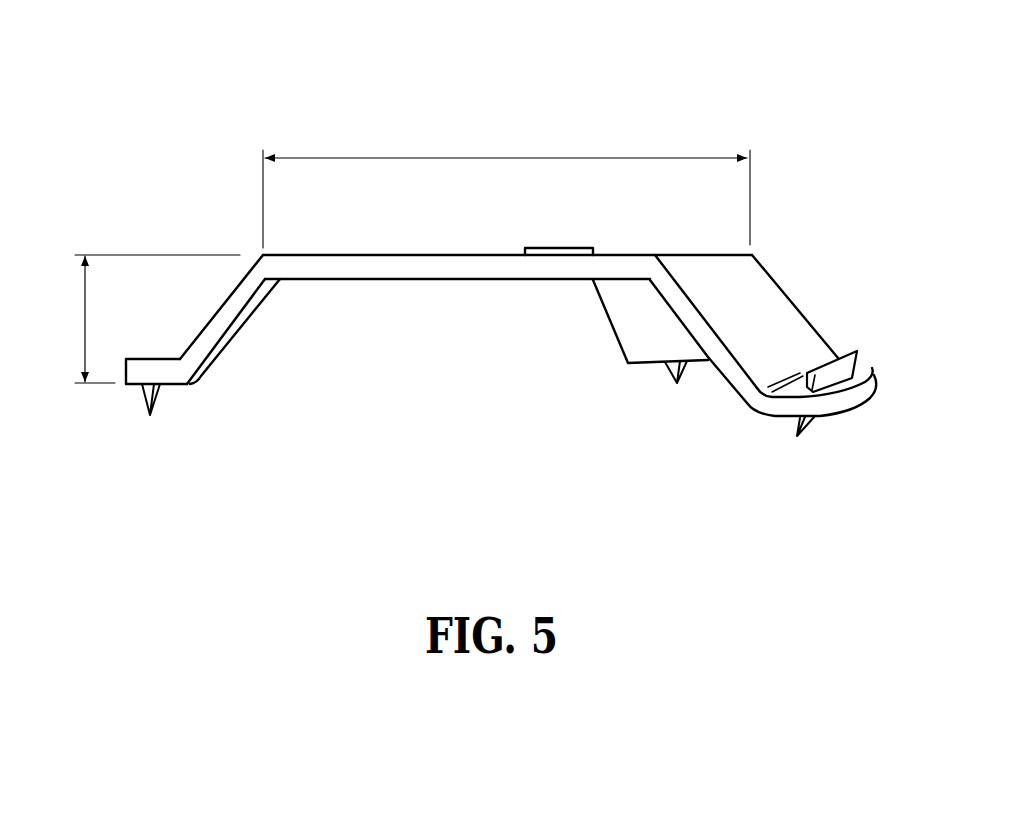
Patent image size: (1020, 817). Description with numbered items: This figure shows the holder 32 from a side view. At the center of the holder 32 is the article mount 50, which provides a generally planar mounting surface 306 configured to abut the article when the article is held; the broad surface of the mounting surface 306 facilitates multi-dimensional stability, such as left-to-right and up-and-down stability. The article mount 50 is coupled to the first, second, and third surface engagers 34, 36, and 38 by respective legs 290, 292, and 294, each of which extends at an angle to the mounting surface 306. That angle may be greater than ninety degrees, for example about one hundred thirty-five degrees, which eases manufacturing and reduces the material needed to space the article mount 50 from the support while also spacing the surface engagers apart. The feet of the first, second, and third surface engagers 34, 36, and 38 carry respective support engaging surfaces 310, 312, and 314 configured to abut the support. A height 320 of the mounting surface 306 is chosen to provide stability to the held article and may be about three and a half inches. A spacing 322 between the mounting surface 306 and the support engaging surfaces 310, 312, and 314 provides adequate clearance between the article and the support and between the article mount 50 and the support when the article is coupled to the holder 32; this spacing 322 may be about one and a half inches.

The holder 32 is at (670, 87).
The article mount 50 is at (325, 231).
The generally planar mounting surface 306 is at (389, 250).
The height 320 is at (499, 156).
The spacing 322 is at (85, 327).
The leg 294 is at (220, 323).
The third surface engager 38 is at (167, 375).
The support engaging surface 314 is at (133, 384).
The leg 290 is at (630, 325).
The support engaging surface 310 is at (652, 365).
The first surface engager 34 is at (690, 350).
The leg 292 is at (720, 357).
The second surface engager 36 is at (788, 392).
The support engaging surface 312 is at (833, 418).